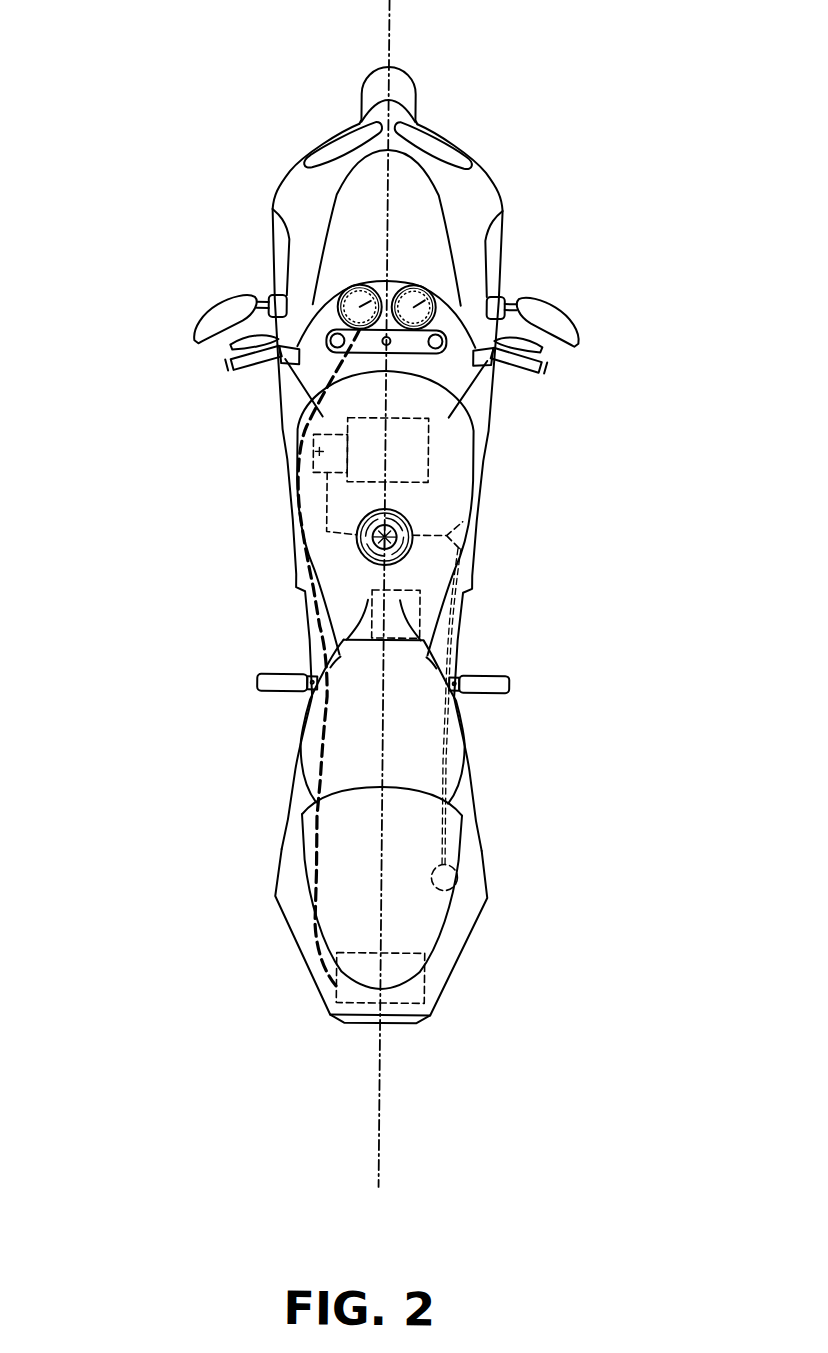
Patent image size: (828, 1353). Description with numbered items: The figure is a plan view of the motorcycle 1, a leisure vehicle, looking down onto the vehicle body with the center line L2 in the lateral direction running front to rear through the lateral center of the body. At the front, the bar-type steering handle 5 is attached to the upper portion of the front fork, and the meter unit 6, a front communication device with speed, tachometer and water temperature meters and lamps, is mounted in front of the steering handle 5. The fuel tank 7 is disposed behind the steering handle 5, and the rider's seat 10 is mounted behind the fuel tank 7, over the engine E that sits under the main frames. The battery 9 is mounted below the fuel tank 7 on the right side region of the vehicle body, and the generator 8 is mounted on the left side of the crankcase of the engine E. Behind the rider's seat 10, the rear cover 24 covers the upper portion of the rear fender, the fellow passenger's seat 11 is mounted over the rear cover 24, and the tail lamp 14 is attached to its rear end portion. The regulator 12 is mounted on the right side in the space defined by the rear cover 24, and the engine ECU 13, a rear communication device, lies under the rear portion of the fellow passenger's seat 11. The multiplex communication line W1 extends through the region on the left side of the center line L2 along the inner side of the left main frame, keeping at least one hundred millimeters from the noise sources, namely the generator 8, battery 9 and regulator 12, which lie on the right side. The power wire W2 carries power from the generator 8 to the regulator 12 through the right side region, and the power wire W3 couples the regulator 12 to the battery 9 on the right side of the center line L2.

The motorcycle 1 is at (171, 100).
The center line in the lateral direction L2 is at (384, 25).
The steering handle 5 is at (543, 377).
The meter unit 6 is at (421, 303).
The fuel tank 7 is at (467, 480).
The generator 8 is at (312, 457).
The battery 9 is at (459, 563).
The rider's seat 10 is at (351, 728).
The fellow passenger's seat 11 is at (334, 862).
The regulator 12 is at (461, 878).
The engine electronic control unit (ECU) 13 is at (429, 988).
The tail lamp 14 is at (366, 1025).
The rear cover 24 is at (458, 957).
The engine E is at (429, 447).
The multiplex communication line W1 is at (319, 640).
The power wire W2 is at (462, 521).
The power wire W3 is at (463, 728).